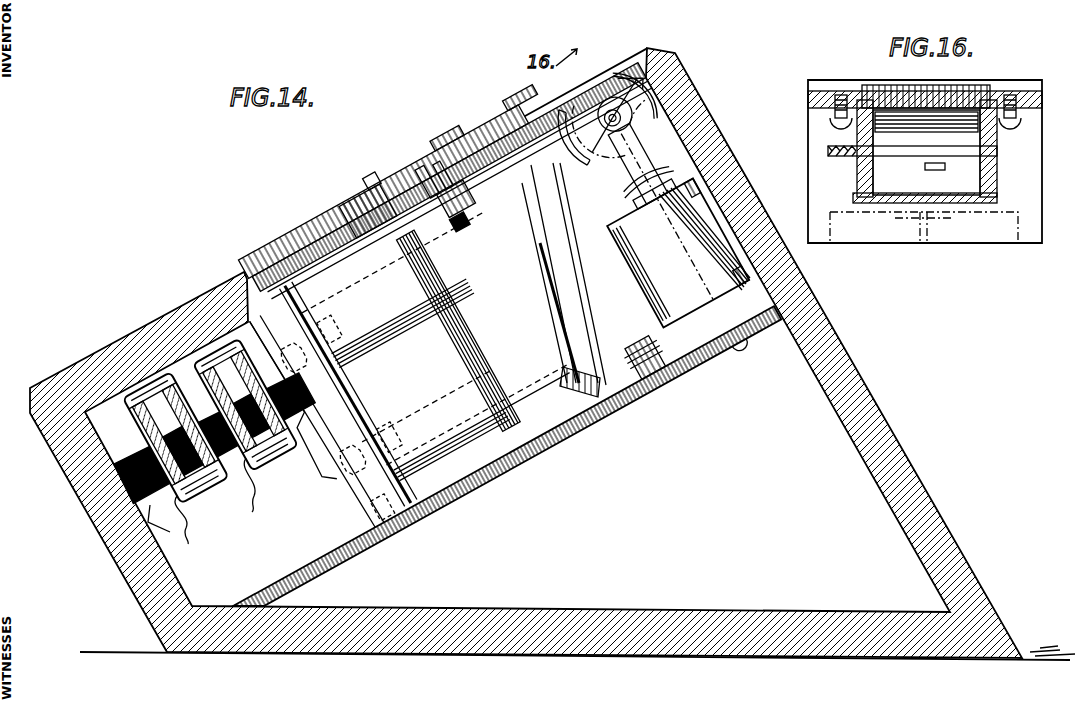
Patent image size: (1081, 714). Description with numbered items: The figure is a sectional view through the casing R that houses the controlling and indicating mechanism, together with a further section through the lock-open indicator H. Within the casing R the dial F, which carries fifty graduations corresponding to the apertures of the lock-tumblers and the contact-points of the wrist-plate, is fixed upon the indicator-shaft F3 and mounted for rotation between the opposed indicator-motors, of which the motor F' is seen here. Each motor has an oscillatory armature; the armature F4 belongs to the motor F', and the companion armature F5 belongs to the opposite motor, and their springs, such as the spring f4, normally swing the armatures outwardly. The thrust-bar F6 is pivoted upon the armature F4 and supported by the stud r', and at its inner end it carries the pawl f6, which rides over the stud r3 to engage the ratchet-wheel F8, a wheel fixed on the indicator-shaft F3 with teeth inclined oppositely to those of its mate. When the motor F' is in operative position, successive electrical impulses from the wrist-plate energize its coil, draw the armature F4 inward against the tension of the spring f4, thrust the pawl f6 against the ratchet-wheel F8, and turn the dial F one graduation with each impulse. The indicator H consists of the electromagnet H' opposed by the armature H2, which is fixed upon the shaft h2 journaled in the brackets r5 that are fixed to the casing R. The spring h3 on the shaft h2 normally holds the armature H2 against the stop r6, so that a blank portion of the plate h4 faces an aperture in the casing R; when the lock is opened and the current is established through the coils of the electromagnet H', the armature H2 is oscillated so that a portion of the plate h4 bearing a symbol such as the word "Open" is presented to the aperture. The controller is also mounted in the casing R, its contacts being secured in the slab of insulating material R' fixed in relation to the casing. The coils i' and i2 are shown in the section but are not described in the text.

In FIG. 14, the casing R is at (552, 354).
In FIG. 16, the casing R is at (925, 161).
In FIG. 14, the slab of insulating material R' is at (217, 442).
In FIG. 14, the indicator H is at (453, 169).
In FIG. 16, the indicator H is at (925, 75).
In FIG. 14, the electromagnet H' is at (692, 278).
In FIG. 16, the electromagnet H' is at (924, 227).
In FIG. 14, the armature H2 is at (628, 185).
In FIG. 16, the armature H2 is at (866, 182).
In FIG. 16, the shaft h2 is at (895, 160).
In FIG. 16, the spring h3 is at (835, 156).
In FIG. 14, the plate h4 is at (617, 112).
In FIG. 16, the plate h4 is at (922, 88).
In FIG. 14, the dial F is at (394, 189).
In FIG. 14, the indicator-motor F' is at (445, 351).
In FIG. 14, the indicator-shaft F3 is at (480, 380).
In FIG. 14, the oscillatory armature F4 is at (543, 290).
In FIG. 14, the oscillatory armature F5 is at (508, 372).
In FIG. 14, the thrust-bar F6 is at (478, 190).
In FIG. 14, the ratchet-wheel F8 is at (372, 272).
In FIG. 14, the spring f4 is at (643, 362).
In FIG. 14, the pawl f6 is at (462, 222).
In FIG. 14, the electromagnet coil i' is at (165, 458).
In FIG. 14, the electromagnet coil i2 is at (215, 372).
In FIG. 14, the stud r' is at (442, 158).
In FIG. 14, the stud r3 is at (424, 186).
In FIG. 14, the bracket r5 is at (603, 157).
In FIG. 16, the bracket r5 is at (841, 120).
In FIG. 14, the stop r6 is at (637, 140).
In FIG. 16, the stop r6 is at (935, 170).